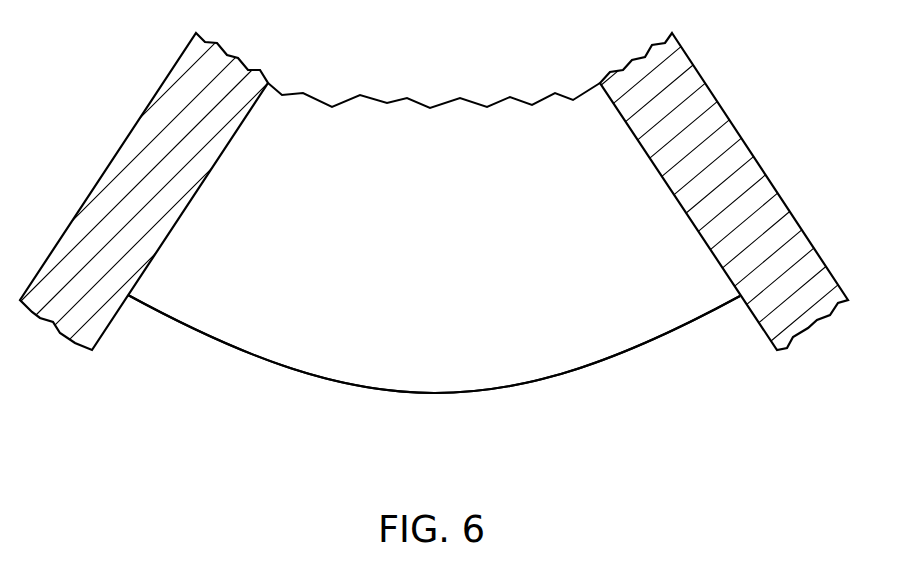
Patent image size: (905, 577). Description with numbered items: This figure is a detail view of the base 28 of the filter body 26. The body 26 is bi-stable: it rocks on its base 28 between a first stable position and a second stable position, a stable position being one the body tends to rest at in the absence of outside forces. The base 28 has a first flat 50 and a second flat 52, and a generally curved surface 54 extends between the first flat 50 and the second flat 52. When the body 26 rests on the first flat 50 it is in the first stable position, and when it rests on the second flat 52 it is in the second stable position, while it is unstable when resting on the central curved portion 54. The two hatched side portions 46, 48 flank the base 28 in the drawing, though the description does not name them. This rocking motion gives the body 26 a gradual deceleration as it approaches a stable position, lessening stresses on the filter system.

The body 26 is at (313, 107).
The base 28 is at (292, 397).
The first side wall 46 is at (157, 100).
The second side wall 48 is at (707, 97).
The first flat 50 is at (167, 315).
The second flat 52 is at (682, 325).
The curved surface 54 is at (498, 392).